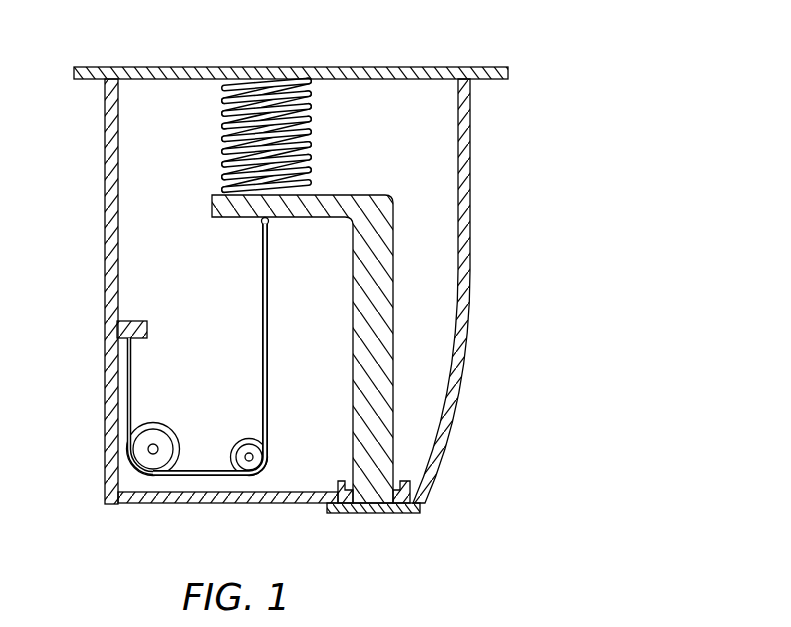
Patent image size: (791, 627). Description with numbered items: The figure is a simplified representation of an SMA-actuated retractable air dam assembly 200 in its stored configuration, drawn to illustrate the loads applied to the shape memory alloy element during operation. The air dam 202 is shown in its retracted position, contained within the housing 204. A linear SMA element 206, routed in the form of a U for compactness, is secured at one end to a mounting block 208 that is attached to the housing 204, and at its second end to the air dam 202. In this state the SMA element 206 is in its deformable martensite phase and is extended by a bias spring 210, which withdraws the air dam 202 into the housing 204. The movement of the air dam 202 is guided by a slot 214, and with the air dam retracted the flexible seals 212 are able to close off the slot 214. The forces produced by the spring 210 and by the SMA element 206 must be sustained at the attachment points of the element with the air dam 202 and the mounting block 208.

The air dam assembly 200 is at (379, 57).
The air dam 202 is at (393, 313).
The housing 204 is at (146, 67).
The linear SMA element 206 is at (262, 322).
The mounting block 208 is at (140, 321).
The bias spring 210 is at (312, 144).
The flexible seals 212 is at (386, 513).
The slot 214 is at (424, 476).